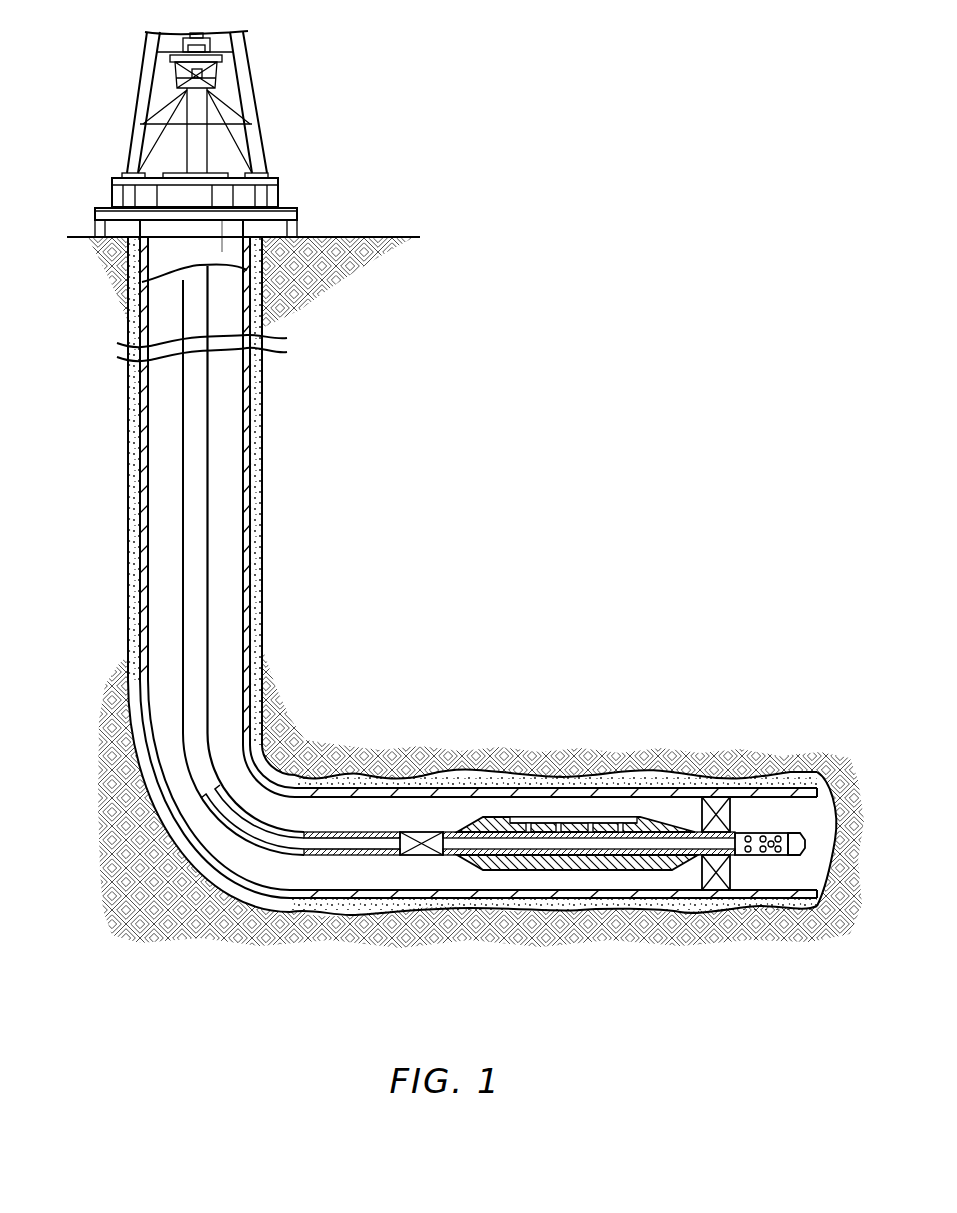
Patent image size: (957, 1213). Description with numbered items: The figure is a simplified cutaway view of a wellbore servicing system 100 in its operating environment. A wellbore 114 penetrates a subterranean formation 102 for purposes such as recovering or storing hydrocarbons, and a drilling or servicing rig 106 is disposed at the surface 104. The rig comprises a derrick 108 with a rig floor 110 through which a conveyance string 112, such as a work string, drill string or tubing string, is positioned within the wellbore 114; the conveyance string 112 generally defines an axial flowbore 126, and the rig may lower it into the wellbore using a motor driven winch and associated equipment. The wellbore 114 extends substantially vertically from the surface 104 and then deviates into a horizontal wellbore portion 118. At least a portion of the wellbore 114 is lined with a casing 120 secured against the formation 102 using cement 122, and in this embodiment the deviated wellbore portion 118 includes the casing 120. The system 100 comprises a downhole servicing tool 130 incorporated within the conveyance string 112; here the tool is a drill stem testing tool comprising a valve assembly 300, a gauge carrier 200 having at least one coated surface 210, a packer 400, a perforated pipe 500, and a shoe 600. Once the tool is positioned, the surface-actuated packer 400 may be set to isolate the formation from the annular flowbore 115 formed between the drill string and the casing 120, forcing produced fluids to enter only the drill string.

The wellbore servicing system 100 is at (487, 590).
The subterranean formation 102 is at (336, 306).
The surface 104 is at (378, 237).
The drilling or servicing rig 106 is at (217, 119).
The derrick 108 is at (143, 76).
The rig floor 110 is at (285, 208).
The conveyance string 112 is at (192, 545).
The wellbore 114 is at (160, 307).
The annular flowbore 115 is at (325, 812).
The deviated or horizontal wellbore portion 118 is at (698, 658).
The casing 120 is at (246, 440).
The cement 122 is at (257, 408).
The axial flowbore 126 is at (372, 847).
The downhole servicing tool 130 is at (575, 847).
The gauge carrier 200 is at (649, 887).
The coated surface 210 is at (530, 832).
The valve assembly 300 is at (426, 874).
The packer 400 is at (692, 803).
The perforated pipe 500 is at (756, 818).
The shoe 600 is at (797, 816).